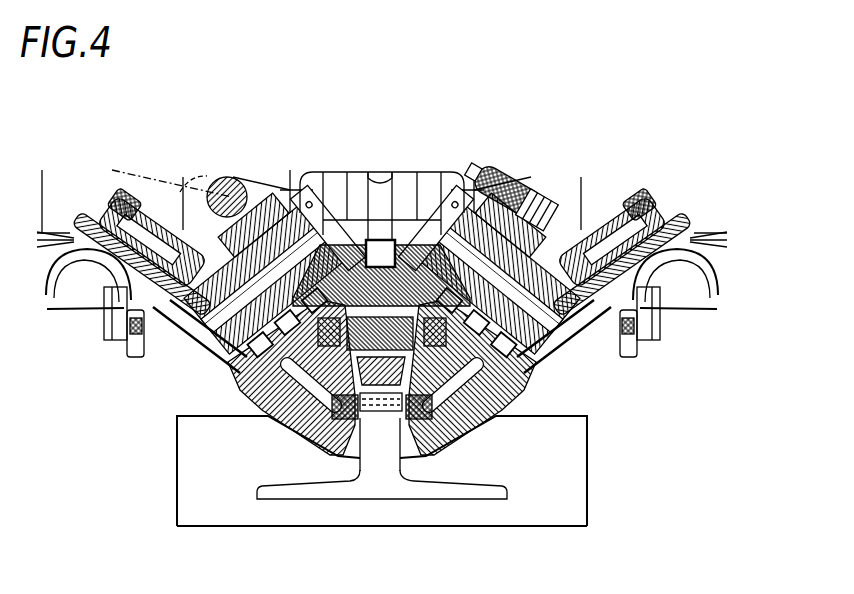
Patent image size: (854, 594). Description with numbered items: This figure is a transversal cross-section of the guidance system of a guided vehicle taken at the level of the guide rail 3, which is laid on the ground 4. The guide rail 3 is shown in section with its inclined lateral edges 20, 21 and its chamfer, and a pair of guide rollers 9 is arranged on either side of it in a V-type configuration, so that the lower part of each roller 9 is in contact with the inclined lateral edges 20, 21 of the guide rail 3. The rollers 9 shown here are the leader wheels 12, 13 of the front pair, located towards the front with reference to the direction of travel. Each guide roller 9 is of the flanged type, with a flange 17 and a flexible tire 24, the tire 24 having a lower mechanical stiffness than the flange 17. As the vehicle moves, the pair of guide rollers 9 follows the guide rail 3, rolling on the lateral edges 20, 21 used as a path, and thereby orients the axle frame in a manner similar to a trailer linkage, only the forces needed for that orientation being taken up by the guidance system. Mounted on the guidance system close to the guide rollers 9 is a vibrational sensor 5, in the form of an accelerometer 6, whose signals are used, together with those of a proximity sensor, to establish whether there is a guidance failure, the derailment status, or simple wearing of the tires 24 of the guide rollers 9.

The guide rail 3 is at (386, 473).
The ground 4 is at (136, 475).
The vibrational sensor 5 is at (394, 263).
The accelerometer 6 is at (385, 222).
The guide roller 9 is at (94, 310).
The leader wheel 12 is at (560, 186).
The leader wheel 13 is at (258, 178).
The flange 17 is at (69, 215).
The inclined lateral edge 20 is at (400, 447).
The inclined lateral edge 21 is at (357, 458).
The flexible tire 24 is at (111, 200).